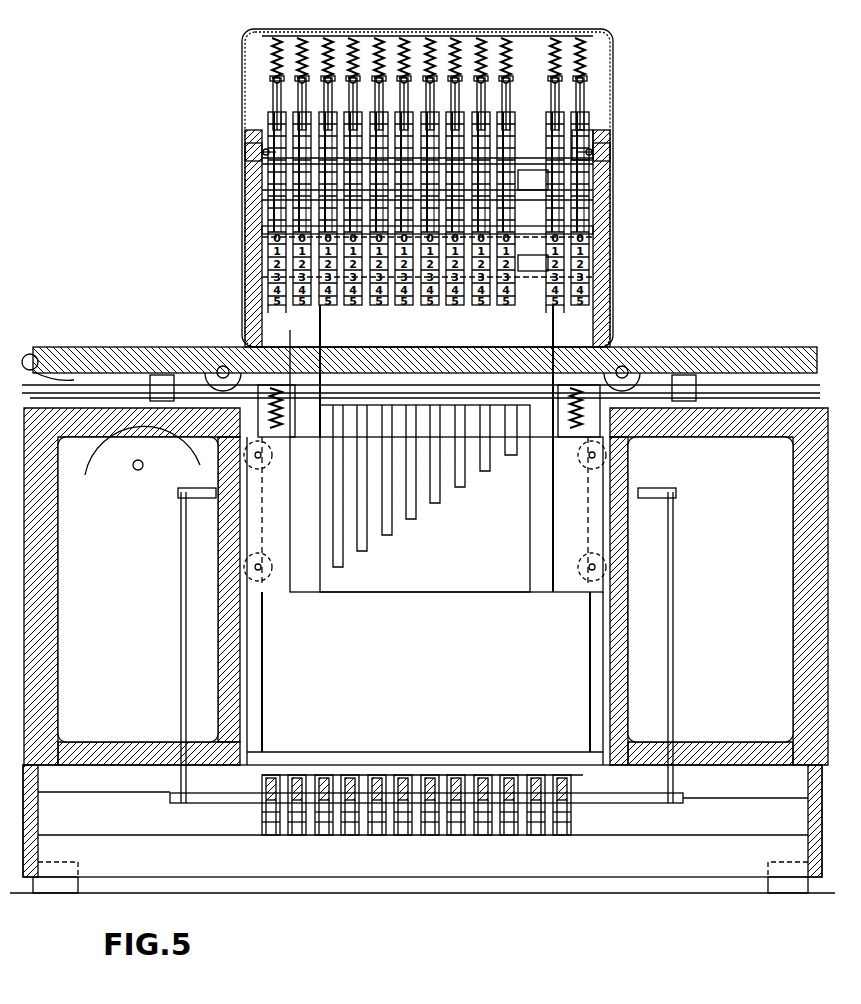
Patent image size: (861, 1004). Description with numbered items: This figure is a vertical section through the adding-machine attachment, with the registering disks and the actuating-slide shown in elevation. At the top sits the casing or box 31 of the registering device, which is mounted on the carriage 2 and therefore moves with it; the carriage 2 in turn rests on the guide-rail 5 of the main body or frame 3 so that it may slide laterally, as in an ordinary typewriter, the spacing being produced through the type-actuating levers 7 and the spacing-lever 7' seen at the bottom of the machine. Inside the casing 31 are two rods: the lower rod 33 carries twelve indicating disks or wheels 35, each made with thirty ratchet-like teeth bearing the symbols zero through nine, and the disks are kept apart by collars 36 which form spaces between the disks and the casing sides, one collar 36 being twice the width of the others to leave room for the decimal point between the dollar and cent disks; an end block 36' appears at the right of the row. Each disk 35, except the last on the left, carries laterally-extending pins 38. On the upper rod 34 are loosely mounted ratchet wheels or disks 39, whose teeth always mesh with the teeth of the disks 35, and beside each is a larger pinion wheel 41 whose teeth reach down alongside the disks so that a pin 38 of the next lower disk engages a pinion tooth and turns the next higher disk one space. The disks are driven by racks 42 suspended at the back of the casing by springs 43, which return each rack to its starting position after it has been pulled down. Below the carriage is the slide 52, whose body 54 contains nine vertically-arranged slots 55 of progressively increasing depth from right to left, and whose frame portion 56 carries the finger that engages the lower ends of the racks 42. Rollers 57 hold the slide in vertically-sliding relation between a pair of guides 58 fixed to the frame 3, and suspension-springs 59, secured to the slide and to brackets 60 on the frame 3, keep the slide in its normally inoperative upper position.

The carriage 2 is at (108, 347).
The main body or frame 3 is at (52, 614).
The guide-rail 5 is at (722, 382).
The type-actuating levers 7 is at (422, 781).
The spacing-lever 7' is at (271, 786).
The casing or box 31 is at (243, 48).
The lower rod 33 is at (612, 238).
The upper rod 34 is at (245, 150).
The indicating disks or wheels 35 is at (262, 292).
The collars 36 is at (431, 201).
The end slide block 36' is at (615, 131).
The laterally-extending pins 38 is at (345, 318).
The ratchet wheels or disks 39 is at (262, 160).
The pinion wheel or disk 41 is at (262, 193).
The racks 42 is at (272, 82).
The springs 43 is at (368, 36).
The slide 52 is at (402, 592).
The body 54 is at (425, 498).
The comb slots 55 is at (433, 445).
The frame portion 56 is at (322, 350).
The rollers 57 is at (244, 455).
The guides 58 is at (262, 640).
The suspension-springs 59 is at (286, 420).
The brackets 60 is at (262, 420).